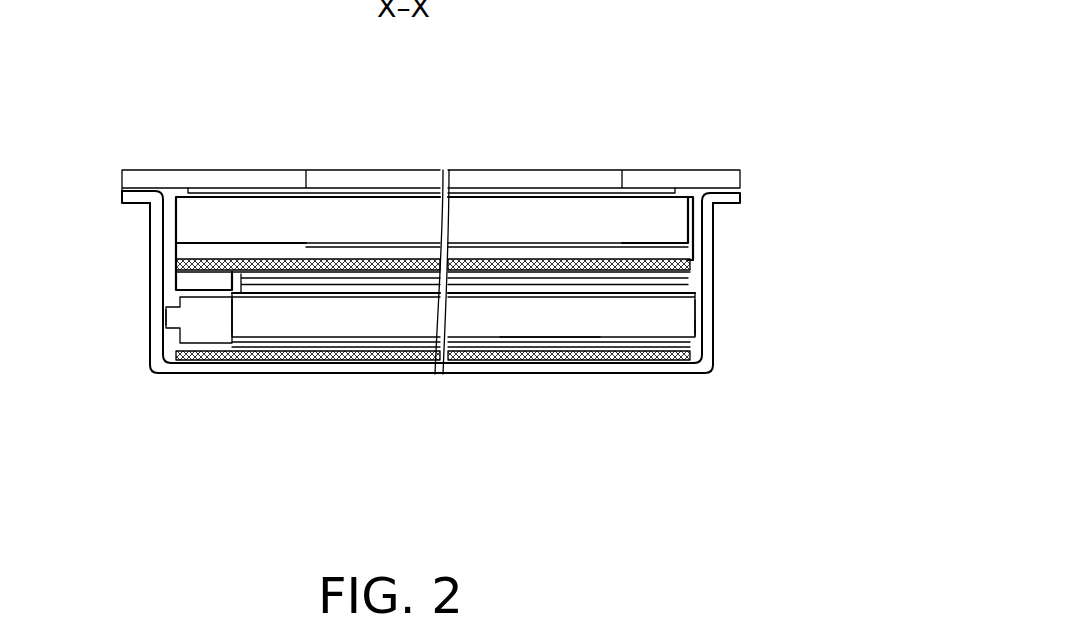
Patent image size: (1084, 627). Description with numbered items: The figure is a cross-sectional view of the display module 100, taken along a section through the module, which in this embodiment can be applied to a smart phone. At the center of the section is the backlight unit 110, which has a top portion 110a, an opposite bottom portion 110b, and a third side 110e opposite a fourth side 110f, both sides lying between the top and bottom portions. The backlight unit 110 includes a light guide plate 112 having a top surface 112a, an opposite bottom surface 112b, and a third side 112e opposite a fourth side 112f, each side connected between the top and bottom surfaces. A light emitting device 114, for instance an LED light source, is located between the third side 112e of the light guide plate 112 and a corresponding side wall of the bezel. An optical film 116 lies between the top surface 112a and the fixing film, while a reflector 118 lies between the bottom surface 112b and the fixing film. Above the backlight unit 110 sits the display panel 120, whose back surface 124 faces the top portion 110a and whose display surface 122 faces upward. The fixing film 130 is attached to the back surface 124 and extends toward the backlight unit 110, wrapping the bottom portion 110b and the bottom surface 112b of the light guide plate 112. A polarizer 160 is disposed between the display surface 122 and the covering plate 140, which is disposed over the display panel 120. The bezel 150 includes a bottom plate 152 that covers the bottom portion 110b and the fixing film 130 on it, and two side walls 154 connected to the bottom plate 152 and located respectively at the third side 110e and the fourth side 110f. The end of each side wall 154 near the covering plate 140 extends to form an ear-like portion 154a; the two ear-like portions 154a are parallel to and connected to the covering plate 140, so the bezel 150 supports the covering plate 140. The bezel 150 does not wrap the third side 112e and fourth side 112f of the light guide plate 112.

The display module 100 is at (783, 73).
The backlight unit 110 is at (423, 316).
The top portion 110a is at (289, 266).
The bottom portion 110b is at (391, 353).
The third side 110e is at (158, 311).
The fourth side 110f is at (705, 332).
The light guide plate 112 is at (270, 308).
The top surface 112a is at (612, 286).
The bottom surface 112b is at (566, 347).
The third side 112e is at (223, 311).
The fourth side 112f is at (705, 314).
The light emitting device 114 is at (158, 318).
The optical film 116 is at (353, 280).
The reflector 118 is at (628, 343).
The display panel 120 is at (693, 232).
The display surface 122 is at (207, 188).
The back surface 124 is at (502, 269).
The fixing film 130 is at (218, 358).
The covering plate 140 is at (293, 182).
The bezel 150 is at (427, 303).
The bottom plate 152 is at (184, 367).
The side walls 154 is at (157, 260).
The ear-like portion 154a is at (135, 199).
The polarizer 160 is at (565, 193).